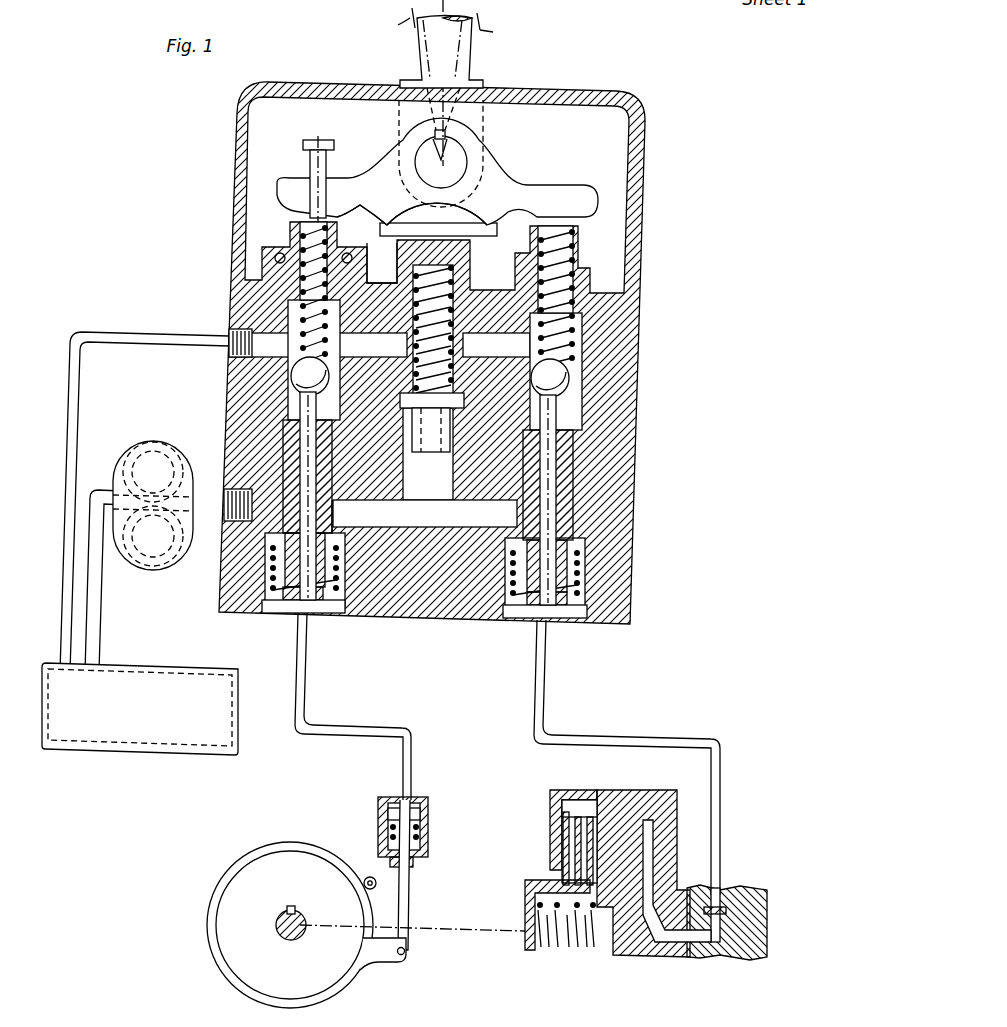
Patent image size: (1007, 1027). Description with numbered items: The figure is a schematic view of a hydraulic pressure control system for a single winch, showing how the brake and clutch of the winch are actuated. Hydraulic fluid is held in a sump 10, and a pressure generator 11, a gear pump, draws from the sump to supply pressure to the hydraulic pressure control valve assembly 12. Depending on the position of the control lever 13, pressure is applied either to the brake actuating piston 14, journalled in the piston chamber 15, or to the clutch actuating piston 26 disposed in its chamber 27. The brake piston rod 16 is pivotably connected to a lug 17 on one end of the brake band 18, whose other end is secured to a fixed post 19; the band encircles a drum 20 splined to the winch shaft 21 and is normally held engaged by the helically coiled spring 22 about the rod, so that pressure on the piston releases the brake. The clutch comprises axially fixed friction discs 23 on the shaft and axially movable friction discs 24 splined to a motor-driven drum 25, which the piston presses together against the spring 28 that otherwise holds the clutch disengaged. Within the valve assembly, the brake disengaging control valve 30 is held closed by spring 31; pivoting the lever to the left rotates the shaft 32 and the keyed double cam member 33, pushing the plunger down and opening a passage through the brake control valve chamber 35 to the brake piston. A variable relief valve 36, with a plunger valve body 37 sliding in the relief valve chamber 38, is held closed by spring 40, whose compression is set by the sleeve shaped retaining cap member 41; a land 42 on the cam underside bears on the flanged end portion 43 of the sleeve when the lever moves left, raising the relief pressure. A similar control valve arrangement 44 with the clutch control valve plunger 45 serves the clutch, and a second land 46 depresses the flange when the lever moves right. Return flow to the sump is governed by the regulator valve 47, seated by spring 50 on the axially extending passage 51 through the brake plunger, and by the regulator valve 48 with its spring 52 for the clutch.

The sump 10 is at (170, 666).
The pressure generator 11 is at (135, 441).
The hydraulic pressure control valve assembly 12 is at (658, 161).
The control lever 13 is at (470, 80).
The brake actuating piston 14 is at (420, 818).
The piston chamber 15 is at (380, 805).
The brake piston rod 16 is at (408, 895).
The lug 17 is at (384, 962).
The brake band 18 is at (222, 968).
The fixed post 19 is at (365, 887).
The drum 20 is at (277, 848).
The shaft 21 is at (293, 940).
The helically coiled spring 22 is at (424, 838).
The friction discs 23 is at (575, 836).
The friction discs 24 is at (600, 768).
The drum 25 is at (553, 790).
The clutch actuating piston 26 is at (650, 795).
The chamber 27 is at (653, 838).
The spring 28 is at (552, 916).
The brake disengaging control valve 30 is at (290, 445).
The spring 31 is at (262, 568).
The shaft 32 is at (455, 152).
The double cam member 33 is at (372, 180).
The brake control valve chamber 35 is at (330, 507).
The variable relief valve 36 is at (463, 440).
The plunger valve body 37 is at (432, 446).
The relief valve chamber 38 is at (440, 500).
The spring 40 is at (458, 360).
The sleeve shaped retaining cap member 41 is at (470, 248).
The land 42 is at (384, 218).
The flanged end portion 43 is at (394, 241).
The control valve arrangement 44 is at (598, 407).
The clutch control valve plunger 45 is at (566, 475).
The land 46 is at (487, 214).
The regulator valve 47 is at (296, 374).
The regulator valve 48 is at (568, 378).
The spring 50 is at (300, 236).
The axially extending passage 51 is at (320, 447).
The spring 52 is at (575, 248).